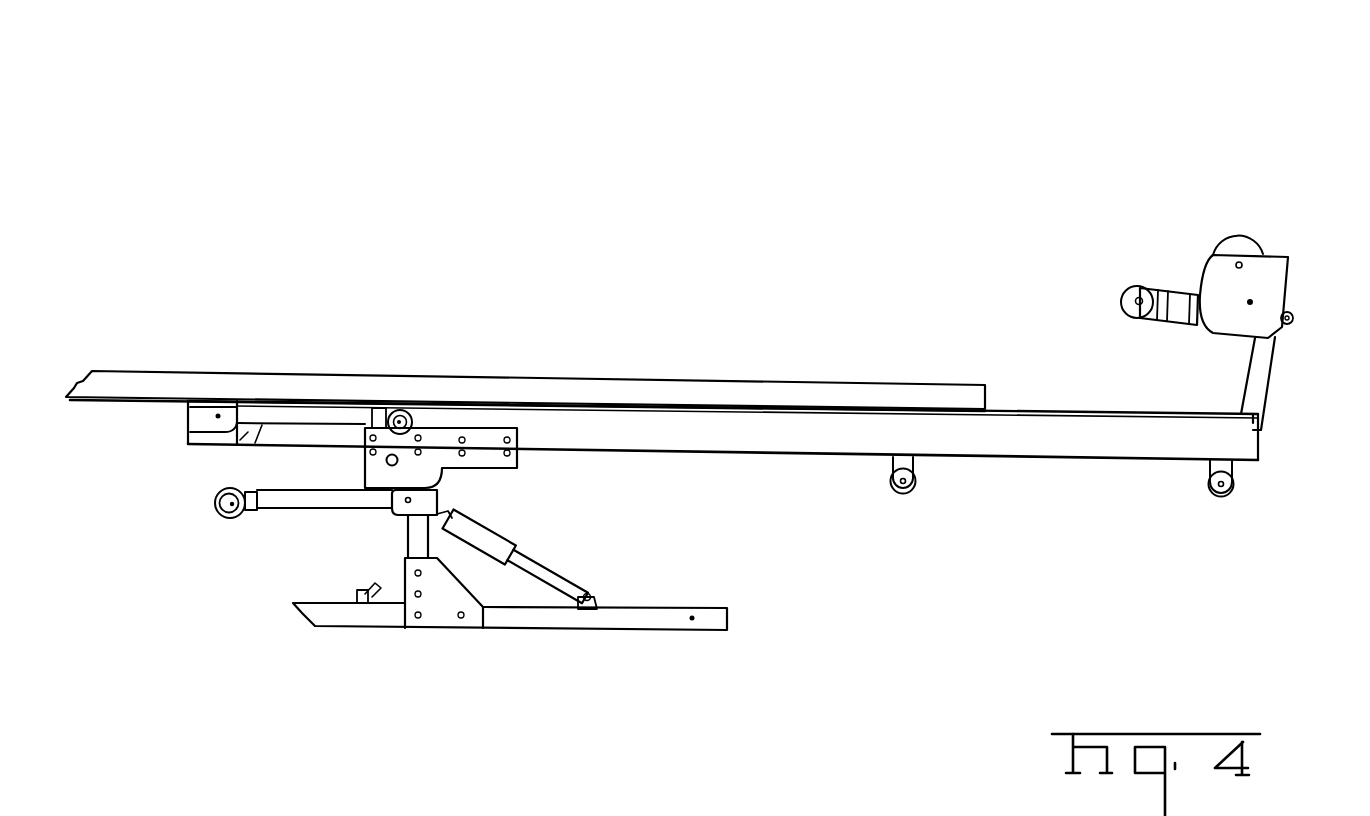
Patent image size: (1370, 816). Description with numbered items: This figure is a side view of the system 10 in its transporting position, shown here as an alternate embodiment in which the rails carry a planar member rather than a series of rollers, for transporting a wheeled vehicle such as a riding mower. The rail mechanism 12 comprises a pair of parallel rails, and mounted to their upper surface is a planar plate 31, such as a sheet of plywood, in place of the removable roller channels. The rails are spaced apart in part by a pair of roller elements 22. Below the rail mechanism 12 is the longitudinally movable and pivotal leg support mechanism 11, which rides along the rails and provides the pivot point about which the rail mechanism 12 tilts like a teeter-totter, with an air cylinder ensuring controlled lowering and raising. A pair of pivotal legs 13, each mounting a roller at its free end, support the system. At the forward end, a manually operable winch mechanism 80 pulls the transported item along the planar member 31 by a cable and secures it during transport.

The system 10 is at (732, 291).
The leg support mechanism 11 is at (442, 500).
The rail mechanism 12 is at (1045, 411).
The pivotal rear legs 13 is at (231, 447).
The roller elements 22 is at (898, 493).
The planar plate 31 is at (563, 384).
The winch mechanism 80 is at (1202, 282).